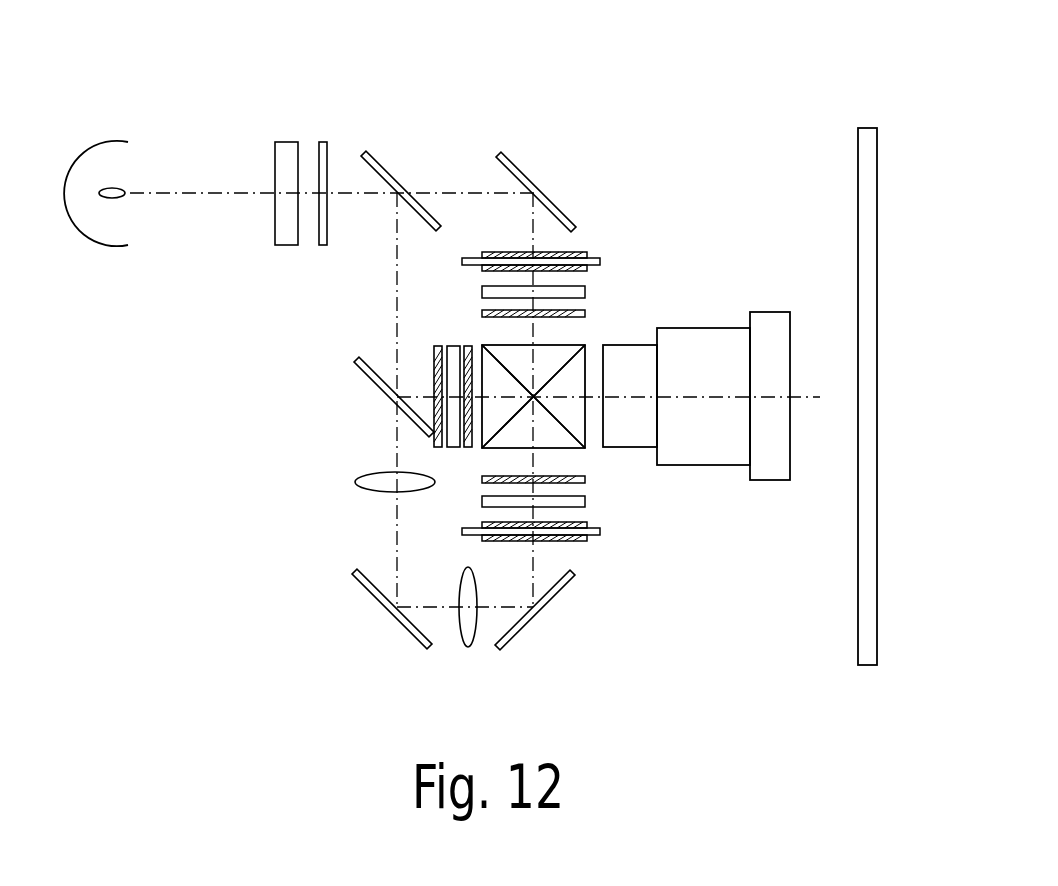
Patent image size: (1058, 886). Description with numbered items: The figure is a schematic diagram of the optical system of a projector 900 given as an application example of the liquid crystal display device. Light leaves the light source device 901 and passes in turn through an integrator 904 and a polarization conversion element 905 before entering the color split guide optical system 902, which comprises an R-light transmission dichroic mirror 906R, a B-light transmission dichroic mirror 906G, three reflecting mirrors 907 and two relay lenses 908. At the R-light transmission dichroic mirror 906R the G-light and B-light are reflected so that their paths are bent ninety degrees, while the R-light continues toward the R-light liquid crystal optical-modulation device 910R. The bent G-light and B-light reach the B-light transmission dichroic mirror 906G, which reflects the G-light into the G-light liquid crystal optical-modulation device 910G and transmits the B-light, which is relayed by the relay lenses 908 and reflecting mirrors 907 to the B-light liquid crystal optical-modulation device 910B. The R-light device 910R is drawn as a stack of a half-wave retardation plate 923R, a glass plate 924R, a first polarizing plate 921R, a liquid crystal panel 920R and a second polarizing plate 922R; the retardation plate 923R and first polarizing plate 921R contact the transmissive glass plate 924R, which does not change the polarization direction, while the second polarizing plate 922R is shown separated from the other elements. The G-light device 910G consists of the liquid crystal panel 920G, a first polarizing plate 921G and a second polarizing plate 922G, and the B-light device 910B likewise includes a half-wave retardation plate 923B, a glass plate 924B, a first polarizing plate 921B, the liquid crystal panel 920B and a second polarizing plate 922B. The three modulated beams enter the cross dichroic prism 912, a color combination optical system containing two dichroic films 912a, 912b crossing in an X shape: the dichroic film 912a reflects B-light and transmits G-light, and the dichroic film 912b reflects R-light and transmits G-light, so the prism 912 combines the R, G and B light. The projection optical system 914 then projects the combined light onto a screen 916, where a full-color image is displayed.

The projector 900 is at (655, 95).
The light source device 901 is at (100, 246).
The color split guide optical system 902 is at (500, 106).
The integrator 904 is at (290, 142).
The polarization conversion element 905 is at (322, 142).
The R-light transmission dichroic mirror 906R is at (385, 163).
The B-light transmission dichroic mirror 906G is at (368, 378).
The reflecting mirror 907 is at (521, 172).
The relay lens 908 is at (357, 481).
The R-light liquid crystal optical-modulation device 910R is at (728, 153).
The G-light liquid crystal optical-modulation device 910G is at (270, 510).
The B-light liquid crystal optical-modulation device 910B is at (728, 485).
The cross dichroic prism 912 is at (557, 449).
The dichroic film 912a is at (566, 350).
The dichroic film 912b is at (490, 345).
The projection optical system 914 is at (770, 473).
The screen 916 is at (866, 128).
The liquid crystal panel 920R is at (585, 292).
The liquid crystal panel 920G is at (450, 447).
The liquid crystal panel 920B is at (585, 502).
The first polarizing plate 921R is at (594, 267).
The first polarizing plate 921G is at (463, 447).
The first polarizing plate 921B is at (592, 526).
The second polarizing plate 922R is at (585, 313).
The second polarizing plate 922G is at (439, 447).
The second polarizing plate 922B is at (585, 479).
The λ/2 retardation plate 923R is at (580, 252).
The λ/2 retardation plate 923B is at (582, 542).
The glass plate 924R is at (594, 258).
The glass plate 924B is at (594, 534).